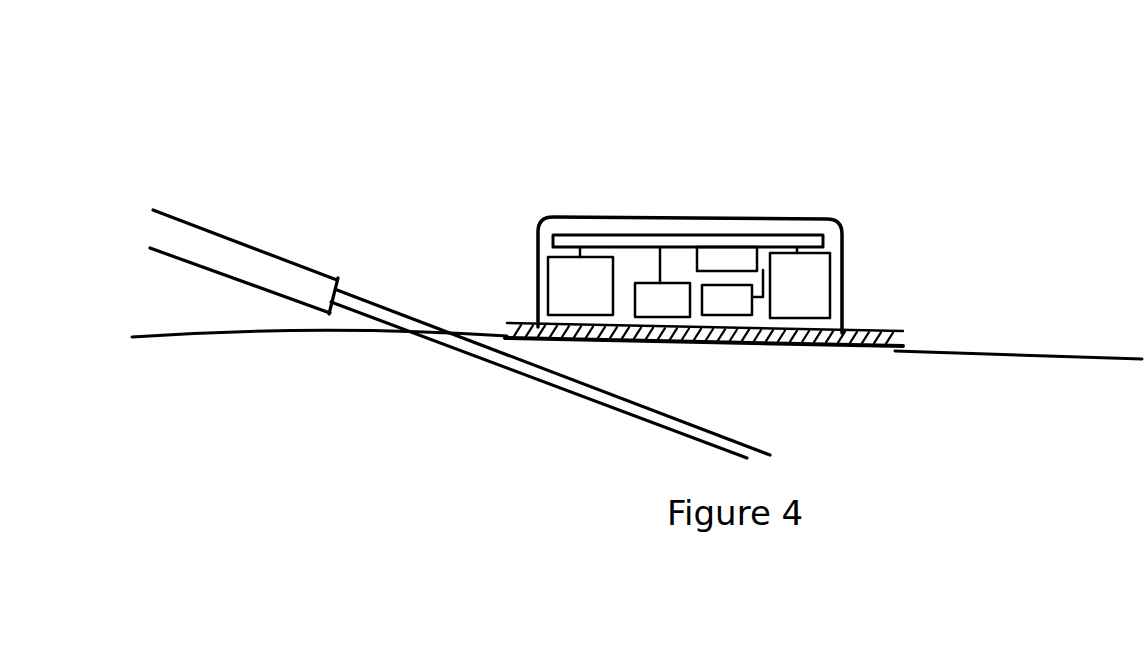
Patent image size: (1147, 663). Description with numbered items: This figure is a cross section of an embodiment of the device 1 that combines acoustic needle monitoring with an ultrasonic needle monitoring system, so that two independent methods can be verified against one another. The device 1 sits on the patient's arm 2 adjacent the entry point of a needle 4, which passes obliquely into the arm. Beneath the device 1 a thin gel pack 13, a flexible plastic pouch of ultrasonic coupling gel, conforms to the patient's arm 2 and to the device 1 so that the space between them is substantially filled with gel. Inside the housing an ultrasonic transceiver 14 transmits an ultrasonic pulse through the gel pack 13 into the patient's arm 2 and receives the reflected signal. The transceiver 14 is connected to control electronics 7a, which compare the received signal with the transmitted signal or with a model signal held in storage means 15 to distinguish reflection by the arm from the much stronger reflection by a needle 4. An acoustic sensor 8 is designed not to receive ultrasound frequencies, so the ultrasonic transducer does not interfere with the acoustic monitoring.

The device 1 is at (873, 148).
The patient's arm 2 is at (1040, 343).
The needle 4 is at (384, 289).
The control electronics 7a is at (712, 232).
The acoustic sensor 8 is at (647, 297).
The gel pack 13 is at (877, 330).
The ultrasonic transceiver 14 is at (727, 300).
The storage means 15 is at (730, 254).